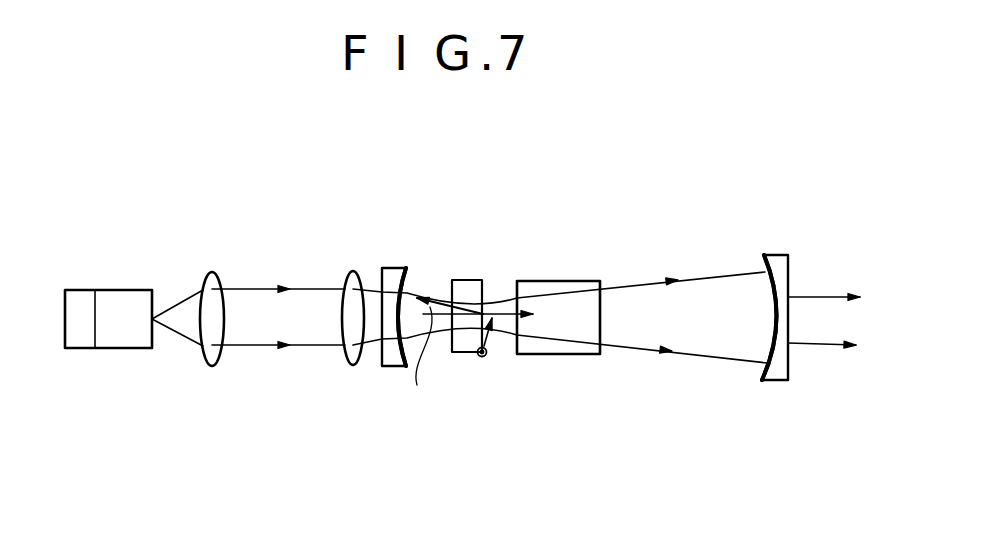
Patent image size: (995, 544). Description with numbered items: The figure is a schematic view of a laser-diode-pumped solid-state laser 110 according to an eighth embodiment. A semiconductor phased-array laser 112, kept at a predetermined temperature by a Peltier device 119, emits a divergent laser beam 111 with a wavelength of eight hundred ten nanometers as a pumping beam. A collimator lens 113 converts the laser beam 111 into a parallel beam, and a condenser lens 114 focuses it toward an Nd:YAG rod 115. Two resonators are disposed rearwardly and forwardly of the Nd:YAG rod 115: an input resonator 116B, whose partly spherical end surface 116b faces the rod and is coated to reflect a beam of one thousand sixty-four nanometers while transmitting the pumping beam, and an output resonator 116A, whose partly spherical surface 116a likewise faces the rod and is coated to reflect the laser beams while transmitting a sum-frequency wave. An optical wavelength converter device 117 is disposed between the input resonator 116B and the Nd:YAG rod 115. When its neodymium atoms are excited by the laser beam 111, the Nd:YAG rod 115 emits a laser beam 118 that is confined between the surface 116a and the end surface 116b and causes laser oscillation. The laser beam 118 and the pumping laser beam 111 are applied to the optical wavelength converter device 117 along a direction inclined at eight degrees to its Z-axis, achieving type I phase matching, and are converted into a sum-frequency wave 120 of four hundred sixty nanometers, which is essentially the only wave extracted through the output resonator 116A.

The laser-diode-pumped solid-state laser 110 is at (448, 168).
The laser beam 111 is at (242, 288).
The semiconductor laser 112 is at (137, 292).
The collimator lens 113 is at (210, 350).
The condenser lens 114 is at (350, 355).
The Nd:YAG rod 115 is at (587, 282).
The output resonator 116A is at (782, 380).
The input resonator 116B is at (393, 366).
The partly spherical surface 116a is at (770, 295).
The end surface 116b is at (405, 270).
The optical wavelength converter device 117 is at (463, 290).
The laser beam 118 is at (633, 347).
The Peltier device 119 is at (80, 298).
The sum-frequency wave 120 is at (825, 342).